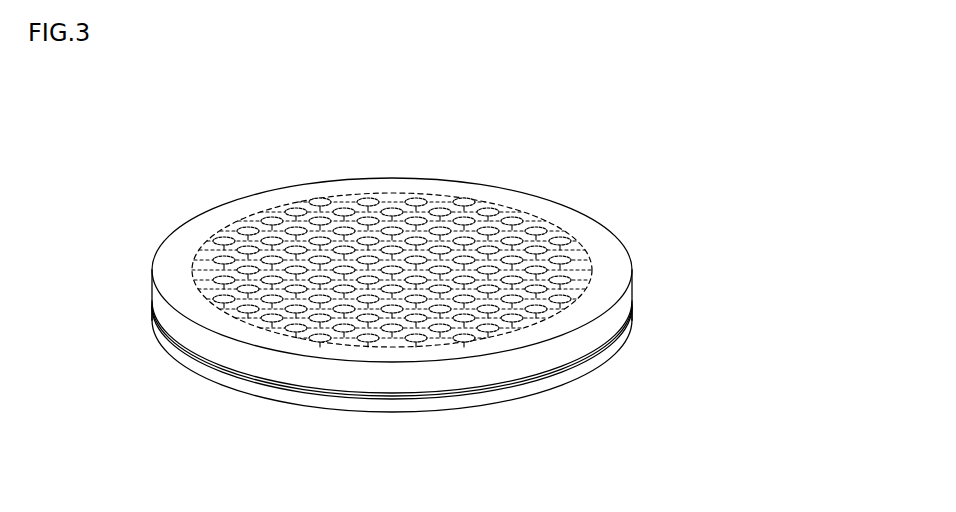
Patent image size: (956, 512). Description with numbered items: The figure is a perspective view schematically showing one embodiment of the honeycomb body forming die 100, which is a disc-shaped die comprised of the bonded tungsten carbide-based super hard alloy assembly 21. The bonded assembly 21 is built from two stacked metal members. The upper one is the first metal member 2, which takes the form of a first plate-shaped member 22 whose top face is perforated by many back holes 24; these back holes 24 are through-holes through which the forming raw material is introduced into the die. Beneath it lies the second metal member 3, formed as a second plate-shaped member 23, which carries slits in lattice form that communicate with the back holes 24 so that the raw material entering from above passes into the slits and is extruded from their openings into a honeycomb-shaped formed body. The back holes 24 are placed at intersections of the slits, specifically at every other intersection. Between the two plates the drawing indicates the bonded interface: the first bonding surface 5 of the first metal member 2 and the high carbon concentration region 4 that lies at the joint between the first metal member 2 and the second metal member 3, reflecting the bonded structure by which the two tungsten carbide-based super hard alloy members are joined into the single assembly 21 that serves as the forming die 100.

The honeycomb body forming die 100 is at (818, 76).
The bonded tungsten carbide-based super hard alloy assembly 21 is at (483, 297).
The first plate-shaped member 22 is at (642, 292).
The first metal member 2 is at (392, 243).
The back hole 24 is at (440, 207).
The first bonding surface 5 is at (365, 396).
The high carbon concentration region 4 is at (482, 398).
The second plate-shaped member 23 is at (574, 399).
The second metal member 3 is at (392, 359).